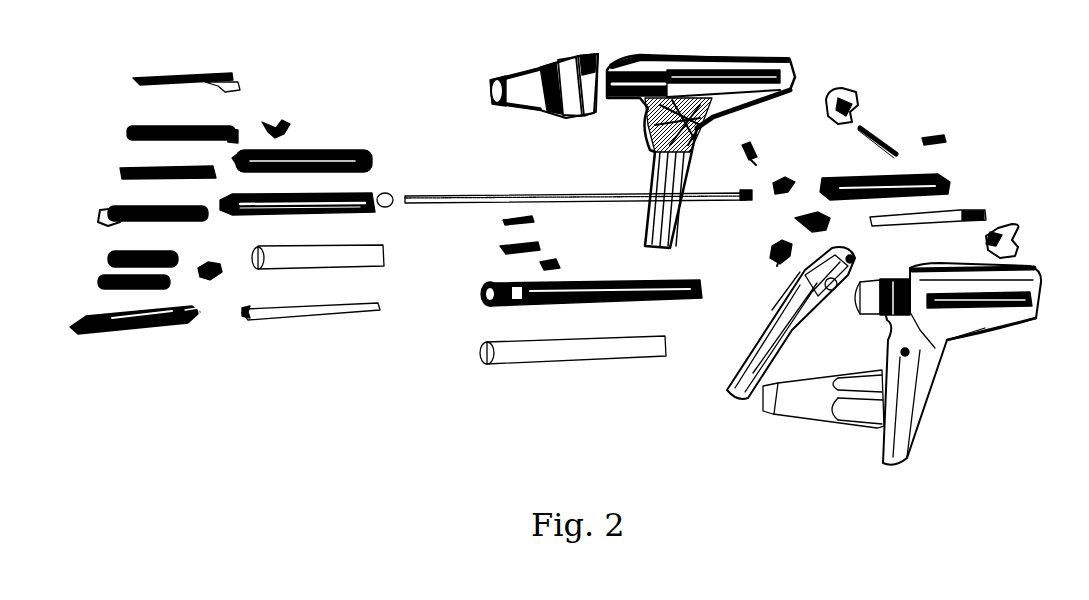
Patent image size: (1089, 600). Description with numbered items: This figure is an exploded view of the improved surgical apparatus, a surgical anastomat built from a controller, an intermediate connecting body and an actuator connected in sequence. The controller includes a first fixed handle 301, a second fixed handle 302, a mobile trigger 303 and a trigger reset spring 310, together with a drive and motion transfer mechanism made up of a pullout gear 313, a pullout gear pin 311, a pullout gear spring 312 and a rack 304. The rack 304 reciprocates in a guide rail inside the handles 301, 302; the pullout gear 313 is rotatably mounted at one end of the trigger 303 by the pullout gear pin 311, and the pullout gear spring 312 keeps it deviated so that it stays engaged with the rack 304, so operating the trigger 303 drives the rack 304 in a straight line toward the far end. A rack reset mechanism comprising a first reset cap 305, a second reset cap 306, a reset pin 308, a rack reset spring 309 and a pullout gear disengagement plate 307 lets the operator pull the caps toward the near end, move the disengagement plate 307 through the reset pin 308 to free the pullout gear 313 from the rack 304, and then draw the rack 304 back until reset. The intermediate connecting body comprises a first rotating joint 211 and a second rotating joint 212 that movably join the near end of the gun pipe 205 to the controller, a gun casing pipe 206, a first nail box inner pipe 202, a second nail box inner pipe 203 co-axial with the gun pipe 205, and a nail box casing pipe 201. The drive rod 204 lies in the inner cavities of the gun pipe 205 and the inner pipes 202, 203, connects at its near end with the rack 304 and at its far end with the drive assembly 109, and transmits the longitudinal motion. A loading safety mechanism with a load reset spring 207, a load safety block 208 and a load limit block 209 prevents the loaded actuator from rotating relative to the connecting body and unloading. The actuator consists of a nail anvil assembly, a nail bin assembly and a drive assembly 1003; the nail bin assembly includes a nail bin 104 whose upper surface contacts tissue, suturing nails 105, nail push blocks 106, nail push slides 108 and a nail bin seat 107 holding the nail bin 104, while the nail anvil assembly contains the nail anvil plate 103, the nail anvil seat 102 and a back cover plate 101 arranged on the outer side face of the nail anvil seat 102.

The back cover plate 101 is at (150, 70).
The nail anvil seat 102 is at (140, 122).
The nail anvil plate 103 is at (132, 170).
The nail bin 104 is at (115, 208).
The suturing nails 105 is at (112, 255).
The nail push blocks 106 is at (98, 282).
The nail bin seat 107 is at (166, 340).
The nail push slides 108 is at (222, 277).
The drive assembly 109 is at (282, 125).
The drive assembly 1003 is at (282, 315).
The nail box casing pipe 201 is at (345, 263).
The first nail box inner pipe 202 is at (372, 206).
The second nail box inner pipe 203 is at (352, 150).
The drive rod 204 is at (502, 195).
The gun pipe 205 is at (500, 302).
The gun casing pipe 206 is at (500, 360).
The load reset spring 207 is at (503, 221).
The load safety block 208 is at (512, 252).
The load limit block 209 is at (560, 264).
The first rotating joint 211 is at (533, 88).
The second rotating joint 212 is at (818, 406).
The first fixed handle 301 is at (925, 400).
The second fixed handle 302 is at (795, 80).
The mobile trigger 303 is at (740, 362).
The rack 304 is at (942, 175).
The first reset cap 305 is at (845, 92).
The second reset cap 306 is at (878, 136).
The pullout gear disengagement plate 307 is at (962, 214).
The reset pin 308 is at (1015, 230).
The rack reset spring 309 is at (940, 137).
The trigger reset spring 310 is at (772, 262).
The pullout gear pin 311 is at (758, 148).
The pullout gear spring 312 is at (790, 182).
The pullout gear 313 is at (830, 226).